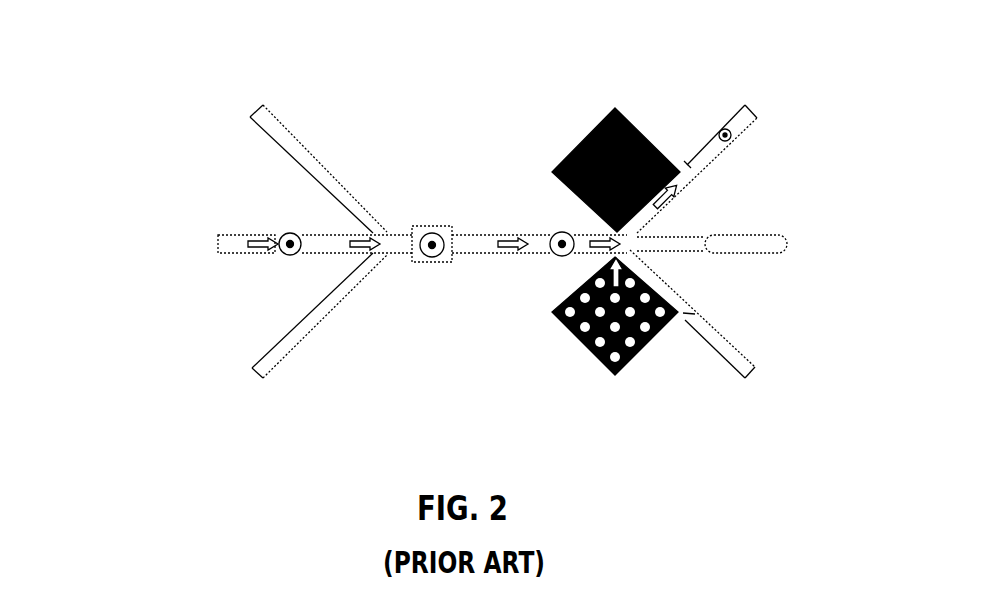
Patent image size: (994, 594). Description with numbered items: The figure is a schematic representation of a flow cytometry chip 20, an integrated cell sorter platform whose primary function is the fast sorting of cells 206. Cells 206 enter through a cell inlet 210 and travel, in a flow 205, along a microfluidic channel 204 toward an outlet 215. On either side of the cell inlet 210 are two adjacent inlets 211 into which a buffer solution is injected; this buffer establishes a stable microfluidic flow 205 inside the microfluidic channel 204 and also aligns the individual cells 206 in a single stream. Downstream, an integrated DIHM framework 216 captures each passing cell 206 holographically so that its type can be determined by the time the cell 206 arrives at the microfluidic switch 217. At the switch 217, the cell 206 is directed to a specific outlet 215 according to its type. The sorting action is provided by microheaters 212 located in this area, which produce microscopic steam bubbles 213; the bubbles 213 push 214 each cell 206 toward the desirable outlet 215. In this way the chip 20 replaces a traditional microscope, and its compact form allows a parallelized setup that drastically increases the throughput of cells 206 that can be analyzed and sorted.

The flow cytometry chip 20 is at (433, 127).
The microfluidic channel 204 is at (472, 248).
The flow 205 is at (505, 240).
The cell 206 is at (284, 254).
The inlet 210 is at (214, 245).
The inlets 211 is at (252, 113).
The microheaters 212 is at (639, 128).
The steam bubbles 213 is at (595, 347).
The pushing 214 is at (588, 280).
The outlet 215 is at (757, 118).
The integrated DIHM framework 216 is at (432, 224).
The microfluidic switch 217 is at (631, 246).